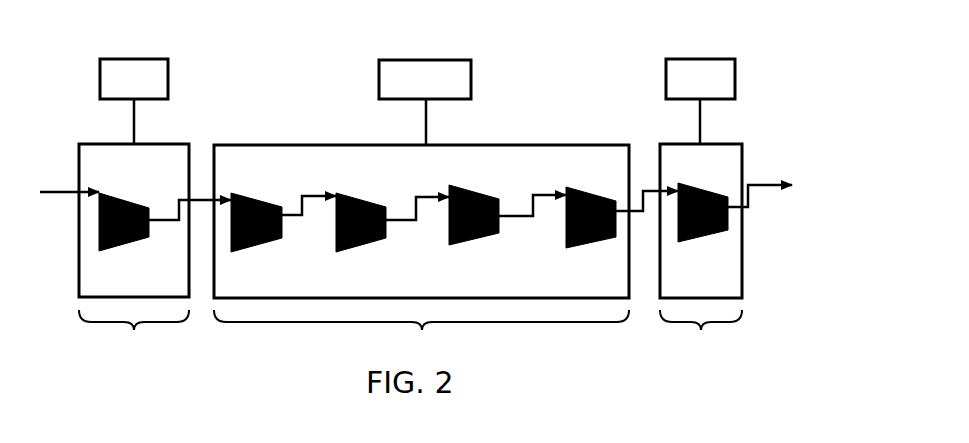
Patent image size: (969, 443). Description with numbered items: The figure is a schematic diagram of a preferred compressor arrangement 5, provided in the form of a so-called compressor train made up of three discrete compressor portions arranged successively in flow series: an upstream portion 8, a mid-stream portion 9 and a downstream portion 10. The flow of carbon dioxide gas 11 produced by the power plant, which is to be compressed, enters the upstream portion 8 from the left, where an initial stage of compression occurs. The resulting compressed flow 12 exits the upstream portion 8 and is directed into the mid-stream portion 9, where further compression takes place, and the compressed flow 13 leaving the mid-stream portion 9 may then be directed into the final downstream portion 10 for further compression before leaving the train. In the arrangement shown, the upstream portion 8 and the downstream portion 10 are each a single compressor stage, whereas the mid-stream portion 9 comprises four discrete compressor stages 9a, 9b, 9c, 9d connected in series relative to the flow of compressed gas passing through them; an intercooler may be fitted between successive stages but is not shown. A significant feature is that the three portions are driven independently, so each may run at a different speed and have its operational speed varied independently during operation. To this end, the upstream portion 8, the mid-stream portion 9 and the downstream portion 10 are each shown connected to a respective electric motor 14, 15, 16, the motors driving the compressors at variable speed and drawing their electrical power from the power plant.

The compressor arrangement 5 is at (785, 40).
The upstream portion 8 is at (134, 254).
The mid-stream portion 9 is at (421, 255).
The compressor stage 9a is at (255, 250).
The compressor stage 9b is at (360, 250).
The compressor stage 9c is at (474, 245).
The compressor stage 9d is at (590, 248).
The downstream portion 10 is at (726, 254).
The flow of carbon dioxide gas 11 is at (60, 190).
The compressed flow 12 is at (200, 198).
The compressed flow 13 is at (650, 190).
The electric motor 14 is at (135, 57).
The electric motor 15 is at (428, 58).
The electric motor 16 is at (700, 57).